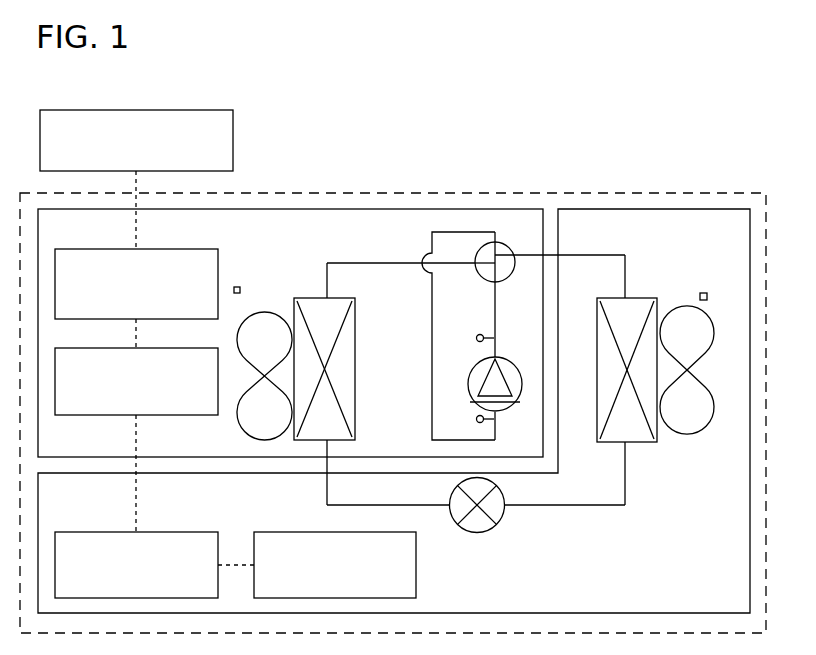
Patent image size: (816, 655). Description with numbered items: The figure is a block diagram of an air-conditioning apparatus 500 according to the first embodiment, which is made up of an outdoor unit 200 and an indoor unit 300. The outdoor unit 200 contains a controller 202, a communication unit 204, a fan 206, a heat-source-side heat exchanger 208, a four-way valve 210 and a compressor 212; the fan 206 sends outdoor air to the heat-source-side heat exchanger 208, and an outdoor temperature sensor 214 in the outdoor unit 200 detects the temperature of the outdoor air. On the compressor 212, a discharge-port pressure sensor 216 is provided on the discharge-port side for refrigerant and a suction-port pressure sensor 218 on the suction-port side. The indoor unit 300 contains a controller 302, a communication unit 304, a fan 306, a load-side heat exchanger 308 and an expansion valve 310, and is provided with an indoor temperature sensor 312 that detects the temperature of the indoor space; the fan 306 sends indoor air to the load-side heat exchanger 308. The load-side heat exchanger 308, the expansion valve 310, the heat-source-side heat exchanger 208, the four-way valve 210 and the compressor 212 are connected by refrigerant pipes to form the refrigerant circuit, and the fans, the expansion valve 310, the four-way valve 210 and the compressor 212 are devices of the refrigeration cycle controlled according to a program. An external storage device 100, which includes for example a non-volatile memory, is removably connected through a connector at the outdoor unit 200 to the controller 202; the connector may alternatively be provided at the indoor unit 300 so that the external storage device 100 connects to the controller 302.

The external storage device 100 is at (235, 140).
The outdoor unit 200 is at (398, 208).
The controller 202 is at (149, 248).
The communication unit 204 is at (146, 347).
The fan 206 is at (266, 310).
The heat-source-side heat exchanger 208 is at (357, 336).
The four-way valve 210 is at (485, 280).
The compressor 212 is at (500, 357).
The outdoor temperature sensor 214 is at (239, 286).
The discharge-port pressure sensor 216 is at (476, 342).
The suction-port pressure sensor 218 is at (476, 421).
The indoor unit 300 is at (682, 208).
The controller 302 is at (417, 588).
The communication unit 304 is at (141, 531).
The fan 306 is at (703, 428).
The load-side heat exchanger 308 is at (648, 443).
The expansion valve 310 is at (498, 522).
The indoor temperature sensor 312 is at (705, 292).
The air-conditioning apparatus 500 is at (551, 192).